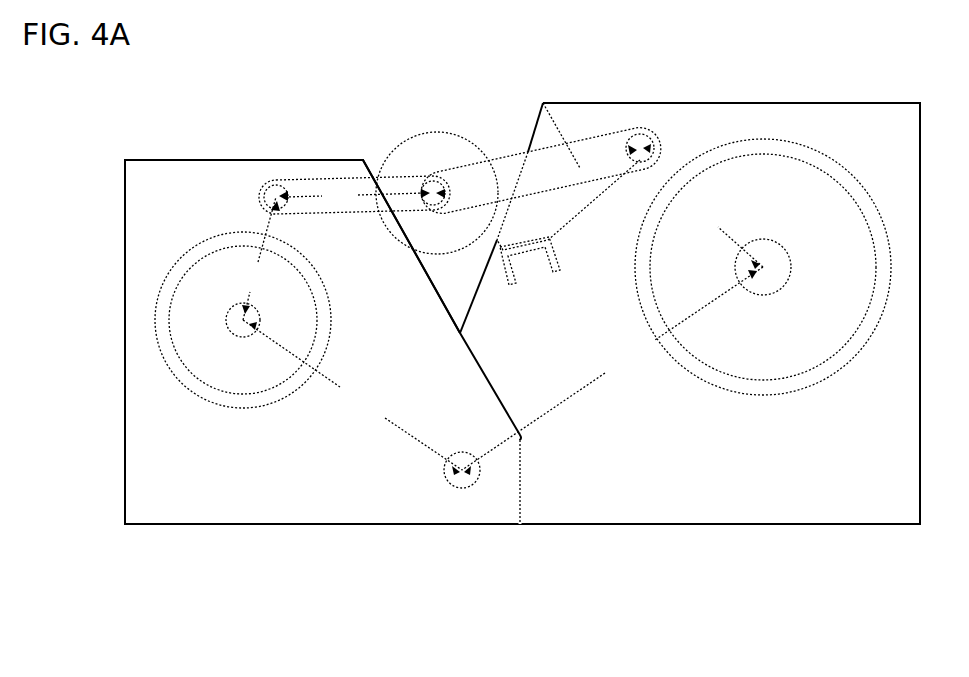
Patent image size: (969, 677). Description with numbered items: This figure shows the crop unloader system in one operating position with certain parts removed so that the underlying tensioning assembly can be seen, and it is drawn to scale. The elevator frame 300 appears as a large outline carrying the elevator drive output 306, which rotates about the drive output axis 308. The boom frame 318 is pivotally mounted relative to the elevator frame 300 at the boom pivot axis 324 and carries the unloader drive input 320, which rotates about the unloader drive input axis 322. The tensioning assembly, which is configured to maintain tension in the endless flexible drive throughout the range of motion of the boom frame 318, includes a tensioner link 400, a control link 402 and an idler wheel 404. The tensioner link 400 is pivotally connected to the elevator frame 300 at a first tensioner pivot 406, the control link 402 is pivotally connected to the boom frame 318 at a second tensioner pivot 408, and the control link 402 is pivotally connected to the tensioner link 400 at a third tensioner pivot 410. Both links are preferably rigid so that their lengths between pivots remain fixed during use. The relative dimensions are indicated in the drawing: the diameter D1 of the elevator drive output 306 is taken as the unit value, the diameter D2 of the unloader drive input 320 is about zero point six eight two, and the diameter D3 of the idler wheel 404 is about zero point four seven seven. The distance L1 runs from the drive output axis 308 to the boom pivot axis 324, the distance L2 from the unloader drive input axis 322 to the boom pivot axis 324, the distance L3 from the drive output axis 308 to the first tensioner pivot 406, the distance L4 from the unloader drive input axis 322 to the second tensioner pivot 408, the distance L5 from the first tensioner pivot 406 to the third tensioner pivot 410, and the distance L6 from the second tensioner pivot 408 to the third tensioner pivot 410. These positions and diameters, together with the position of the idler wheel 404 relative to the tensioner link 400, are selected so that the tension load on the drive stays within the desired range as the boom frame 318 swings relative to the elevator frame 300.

The elevator frame 300 is at (610, 497).
The elevator drive output 306 is at (690, 330).
The drive output axis 308 is at (767, 277).
The boom frame 318 is at (308, 465).
The unloader drive input 320 is at (197, 327).
The unloader drive input axis 322 is at (243, 322).
The boom pivot axis 324 is at (462, 488).
The tensioner link 400 is at (543, 102).
The control link 402 is at (292, 186).
The idler wheel 404 is at (397, 148).
The first tensioner pivot 406 is at (633, 135).
The second tensioner pivot 408 is at (272, 200).
The third tensioner pivot 410 is at (427, 181).
The distance from drive output axis to boom pivot axis L1 is at (612, 368).
The distance from unloader drive input axis to boom pivot axis L2 is at (352, 395).
The distance from drive output axis to first tensioner pivot L3 is at (731, 236).
The distance from unloader drive input axis to second tensioner pivot L4 is at (259, 258).
The distance from first tensioner pivot to third tensioner pivot L5 is at (541, 206).
The distance from second tensioner pivot to third tensioner pivot L6 is at (355, 195).
The diameter of elevator drive output D1 is at (777, 135).
The diameter of unloader drive input D2 is at (218, 232).
The diameter of idler wheel D3 is at (453, 128).